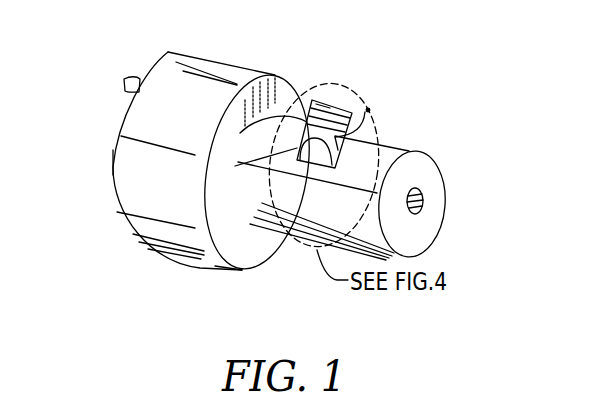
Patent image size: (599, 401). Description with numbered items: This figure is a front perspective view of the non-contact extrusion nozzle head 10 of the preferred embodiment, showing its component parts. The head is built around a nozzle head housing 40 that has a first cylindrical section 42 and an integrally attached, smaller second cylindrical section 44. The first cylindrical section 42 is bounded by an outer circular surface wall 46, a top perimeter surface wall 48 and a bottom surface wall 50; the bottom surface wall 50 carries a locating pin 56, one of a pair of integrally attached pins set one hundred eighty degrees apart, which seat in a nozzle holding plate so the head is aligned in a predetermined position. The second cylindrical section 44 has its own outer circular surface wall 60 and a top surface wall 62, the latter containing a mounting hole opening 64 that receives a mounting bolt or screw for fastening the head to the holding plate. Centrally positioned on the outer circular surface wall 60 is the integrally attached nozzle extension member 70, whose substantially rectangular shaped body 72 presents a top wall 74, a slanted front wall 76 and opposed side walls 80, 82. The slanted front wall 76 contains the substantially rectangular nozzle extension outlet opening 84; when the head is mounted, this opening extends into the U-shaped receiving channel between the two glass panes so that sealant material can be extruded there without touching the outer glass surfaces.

The non-contact extrusion nozzle head 10 is at (491, 104).
The nozzle head housing 40 is at (236, 50).
The first cylindrical section 42 is at (150, 193).
The second cylindrical section 44 is at (407, 148).
The outer circular surface wall 46 is at (182, 88).
The top perimeter surface wall 48 is at (238, 260).
The bottom surface wall 50 is at (113, 157).
The locating pin 56 is at (123, 82).
The outer circular surface wall 60 is at (305, 203).
The top surface wall 62 is at (434, 186).
The mounting hole opening 64 is at (423, 207).
The nozzle extension member 70 is at (343, 101).
The substantially rectangular shaped body 72 is at (368, 110).
The top wall 74 is at (325, 105).
The slanted front wall 76 is at (315, 150).
The side wall 80 is at (257, 140).
The side wall 82 is at (354, 161).
The nozzle extension outlet opening 84 is at (328, 103).